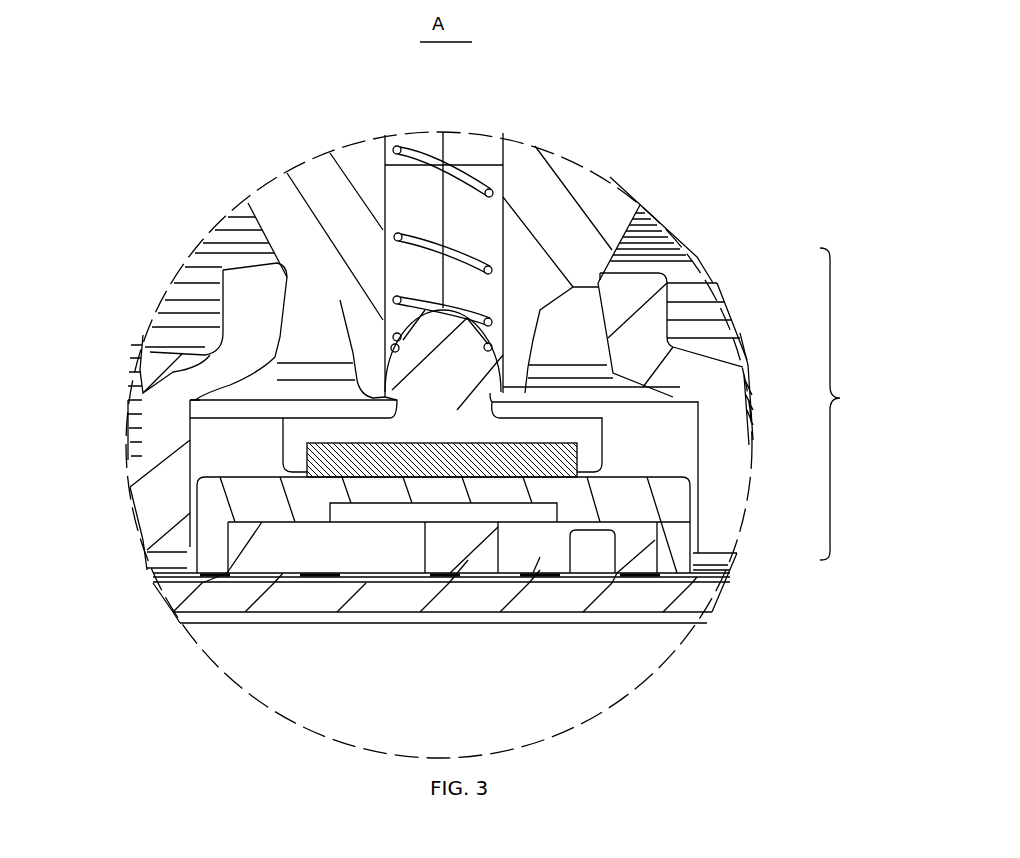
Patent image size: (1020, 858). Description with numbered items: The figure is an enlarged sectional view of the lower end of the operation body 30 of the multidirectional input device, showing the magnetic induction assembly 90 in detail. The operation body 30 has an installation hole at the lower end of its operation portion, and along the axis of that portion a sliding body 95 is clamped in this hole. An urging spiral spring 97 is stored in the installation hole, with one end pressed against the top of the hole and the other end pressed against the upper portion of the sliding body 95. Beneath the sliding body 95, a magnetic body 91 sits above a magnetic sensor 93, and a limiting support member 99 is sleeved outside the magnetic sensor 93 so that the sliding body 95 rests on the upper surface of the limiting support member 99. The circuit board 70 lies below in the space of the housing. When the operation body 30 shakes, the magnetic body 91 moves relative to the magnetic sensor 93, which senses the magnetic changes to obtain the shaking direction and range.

The operation body 30 is at (596, 202).
The circuit board 70 is at (280, 580).
The magnetic induction assembly 90 is at (845, 404).
The magnetic body 91 is at (487, 460).
The magnetic sensor 93 is at (477, 553).
The sliding body 95 is at (463, 393).
The urging spiral spring 97 is at (463, 262).
The limiting support member 99 is at (580, 500).